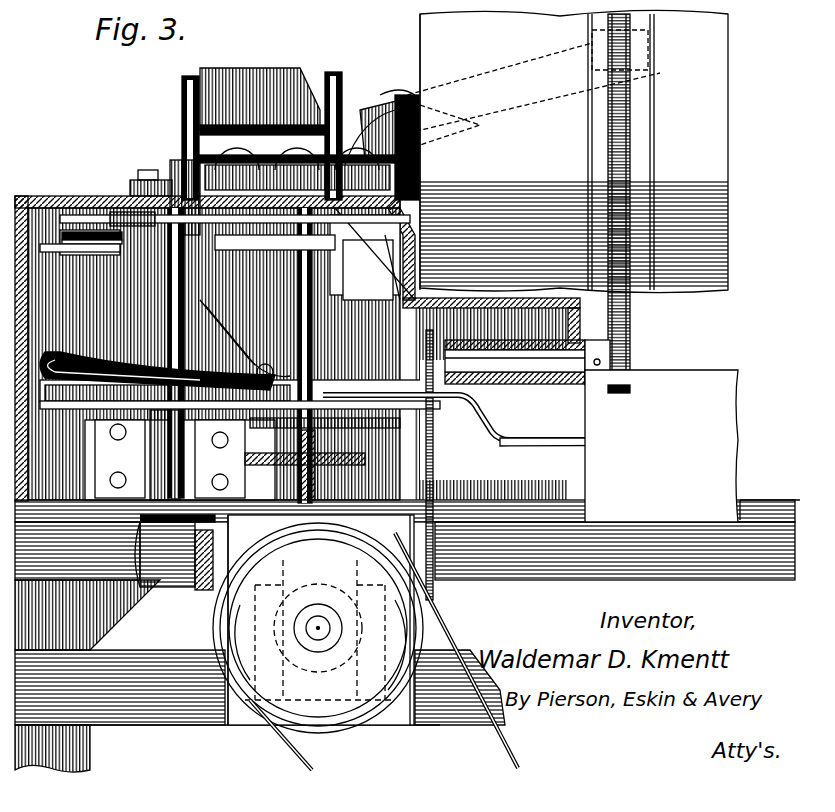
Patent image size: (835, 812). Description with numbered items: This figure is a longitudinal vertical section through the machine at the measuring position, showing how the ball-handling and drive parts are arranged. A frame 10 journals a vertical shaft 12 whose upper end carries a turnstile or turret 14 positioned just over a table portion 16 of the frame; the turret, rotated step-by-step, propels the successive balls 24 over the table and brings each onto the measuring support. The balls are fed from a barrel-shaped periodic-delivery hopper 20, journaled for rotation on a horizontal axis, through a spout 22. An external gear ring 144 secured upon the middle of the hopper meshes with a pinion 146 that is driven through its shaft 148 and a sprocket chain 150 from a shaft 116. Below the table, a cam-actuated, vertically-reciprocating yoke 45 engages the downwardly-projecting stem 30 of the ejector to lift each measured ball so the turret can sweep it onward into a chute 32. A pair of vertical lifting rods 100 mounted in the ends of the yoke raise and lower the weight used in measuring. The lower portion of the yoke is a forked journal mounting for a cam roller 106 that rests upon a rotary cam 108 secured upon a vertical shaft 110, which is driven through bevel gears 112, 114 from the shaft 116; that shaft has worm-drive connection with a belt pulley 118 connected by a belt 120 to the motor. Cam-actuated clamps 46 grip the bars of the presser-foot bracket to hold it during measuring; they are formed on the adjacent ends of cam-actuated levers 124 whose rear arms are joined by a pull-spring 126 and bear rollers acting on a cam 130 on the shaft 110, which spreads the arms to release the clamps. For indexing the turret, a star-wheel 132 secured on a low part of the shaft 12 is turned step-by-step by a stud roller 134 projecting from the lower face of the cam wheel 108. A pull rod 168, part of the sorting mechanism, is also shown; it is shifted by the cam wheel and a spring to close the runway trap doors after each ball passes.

The frame 10 is at (298, 354).
The vertical shaft 12 is at (312, 356).
The turnstile or turret 14 is at (185, 160).
The table portion 16 is at (47, 196).
The periodic-delivery hopper 20 is at (574, 151).
The spout 22 is at (476, 72).
The balls 24 is at (352, 165).
The downwardly-projecting stem 30 is at (338, 268).
The chute 32 is at (386, 267).
The vertically-reciprocating yoke 45 is at (290, 338).
The cam-actuated clamps 46 is at (172, 182).
The vertical lifting rods 100 is at (183, 82).
The cam roller 106 is at (225, 386).
The rotary cam 108 is at (113, 360).
The vertical shaft 110 is at (170, 300).
The bevel gear 112 is at (165, 582).
The bevel gear 114 is at (196, 592).
The shaft 116 is at (432, 590).
The belt pulley 118 is at (318, 624).
The belt 120 is at (440, 616).
The cam-actuated levers 124 is at (125, 252).
The pull-spring 126 is at (88, 233).
The cam 130 is at (118, 214).
The star-wheel 132 is at (246, 462).
The stud roller 134 is at (87, 428).
The external gear ring 144 is at (622, 140).
The pinion 146 is at (620, 395).
The shaft 148 is at (525, 375).
The sprocket chain 150 is at (433, 478).
The pull rod 168 is at (686, 446).